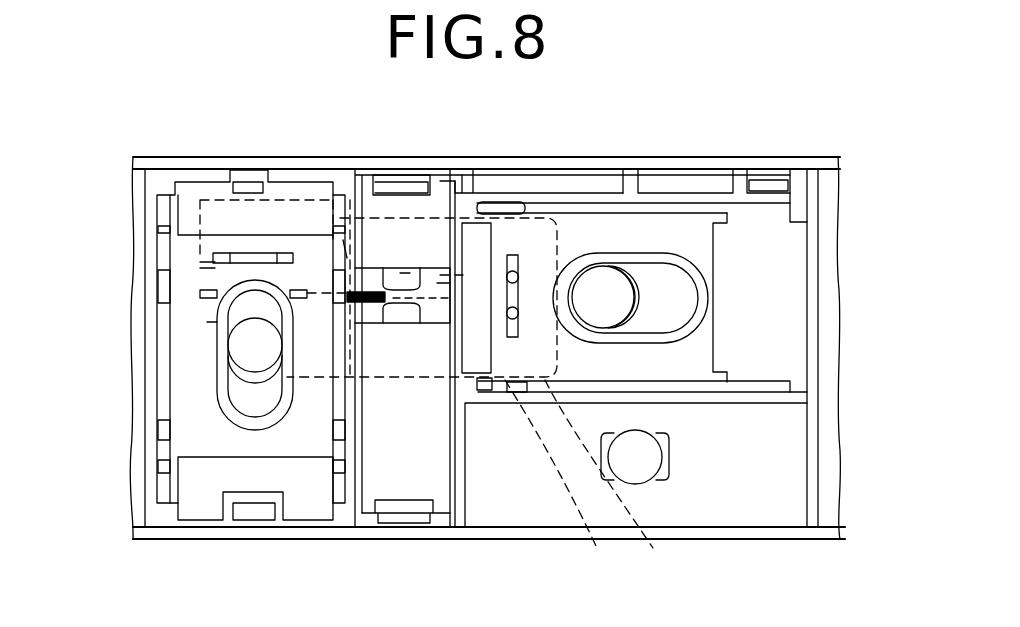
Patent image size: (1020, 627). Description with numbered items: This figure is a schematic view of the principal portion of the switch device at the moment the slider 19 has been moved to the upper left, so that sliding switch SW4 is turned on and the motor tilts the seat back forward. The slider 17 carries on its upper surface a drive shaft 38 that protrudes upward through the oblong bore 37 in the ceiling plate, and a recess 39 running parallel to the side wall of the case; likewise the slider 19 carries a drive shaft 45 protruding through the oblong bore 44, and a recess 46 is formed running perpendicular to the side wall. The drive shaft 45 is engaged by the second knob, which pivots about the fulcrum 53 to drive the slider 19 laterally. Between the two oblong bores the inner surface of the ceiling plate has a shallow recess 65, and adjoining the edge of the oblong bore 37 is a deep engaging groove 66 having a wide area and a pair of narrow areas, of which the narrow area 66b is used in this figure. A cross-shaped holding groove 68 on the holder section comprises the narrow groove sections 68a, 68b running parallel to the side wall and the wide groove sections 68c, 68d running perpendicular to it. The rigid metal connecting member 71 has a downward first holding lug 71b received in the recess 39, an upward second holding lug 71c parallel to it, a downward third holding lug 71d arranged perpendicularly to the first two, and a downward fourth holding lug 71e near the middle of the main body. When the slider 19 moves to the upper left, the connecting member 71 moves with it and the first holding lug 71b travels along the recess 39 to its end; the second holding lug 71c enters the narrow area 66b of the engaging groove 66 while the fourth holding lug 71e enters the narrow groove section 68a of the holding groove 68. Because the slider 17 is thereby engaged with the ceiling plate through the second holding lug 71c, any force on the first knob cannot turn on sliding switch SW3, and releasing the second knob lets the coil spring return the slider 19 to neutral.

The slider 17 is at (213, 458).
The slider 19 is at (715, 252).
The oblong bore 37 is at (212, 396).
The drive shaft 38 is at (228, 347).
The recess 39 is at (263, 252).
The oblong bore 44 is at (675, 275).
The drive shaft 45 is at (598, 282).
The recess 46 is at (508, 256).
The fulcrum 53 is at (650, 455).
The recess 65 is at (457, 183).
The engaging groove 66 is at (210, 263).
The narrow area 66b is at (192, 293).
The holding groove 68 is at (398, 320).
The narrow groove section 68a is at (383, 293).
The narrow groove section 68b is at (437, 283).
The wide groove section 68c is at (405, 268).
The wide groove section 68d is at (405, 273).
The connecting member 71 is at (592, 540).
The first holding lug 71b is at (207, 275).
The second holding lug 71c is at (207, 322).
The third holding lug 71d is at (645, 542).
The fourth holding lug 71e is at (345, 255).